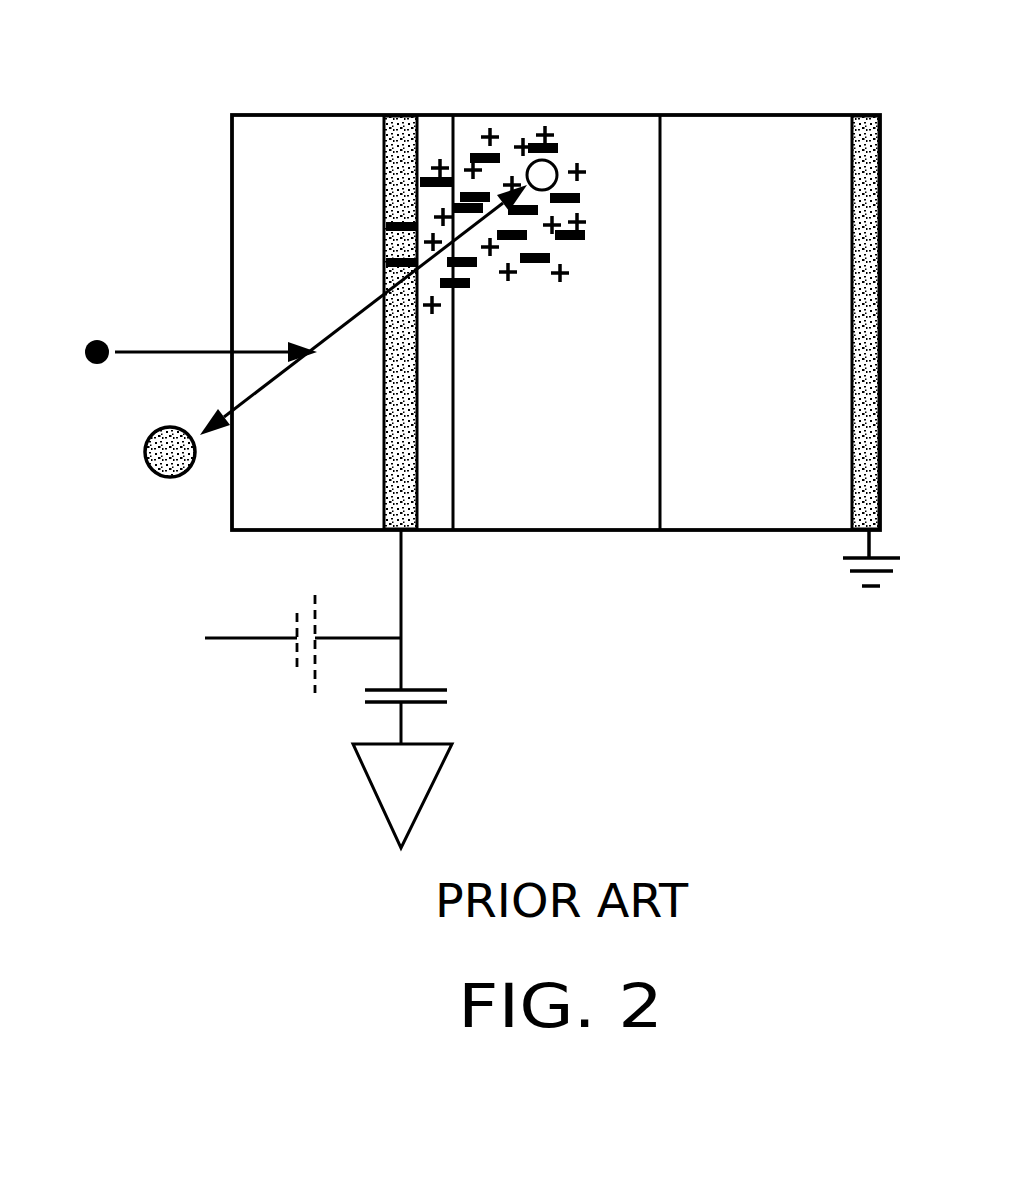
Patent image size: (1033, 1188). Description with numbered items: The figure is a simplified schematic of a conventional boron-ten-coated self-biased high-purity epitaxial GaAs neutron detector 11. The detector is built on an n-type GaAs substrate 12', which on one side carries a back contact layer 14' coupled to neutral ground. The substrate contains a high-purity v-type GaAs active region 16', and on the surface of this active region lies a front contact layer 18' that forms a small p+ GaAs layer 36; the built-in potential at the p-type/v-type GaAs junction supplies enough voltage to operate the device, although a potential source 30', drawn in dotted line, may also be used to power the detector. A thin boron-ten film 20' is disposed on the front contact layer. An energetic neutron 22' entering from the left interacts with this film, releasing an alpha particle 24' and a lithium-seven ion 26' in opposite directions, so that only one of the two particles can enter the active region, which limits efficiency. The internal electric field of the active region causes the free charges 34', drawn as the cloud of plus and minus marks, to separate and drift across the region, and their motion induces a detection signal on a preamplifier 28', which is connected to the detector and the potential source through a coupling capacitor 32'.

The neutron detector 11 is at (148, 183).
The GaAs substrate 12' is at (745, 242).
The back contact layer 14' is at (882, 304).
The high-purity v-type GaAs active region 16' is at (566, 380).
The front contact layer 18' is at (374, 268).
The Boron-10 film 20' is at (265, 131).
The energetic neutron 22' is at (179, 301).
The alpha particle 24' is at (612, 117).
The 7Li ion 26' is at (336, 388).
The preamplifier 28' is at (457, 796).
The potential source 30' is at (303, 671).
The coupling capacitor 32' is at (426, 637).
The free charges 34' is at (503, 169).
The p+ GaAs layer 36 is at (442, 128).